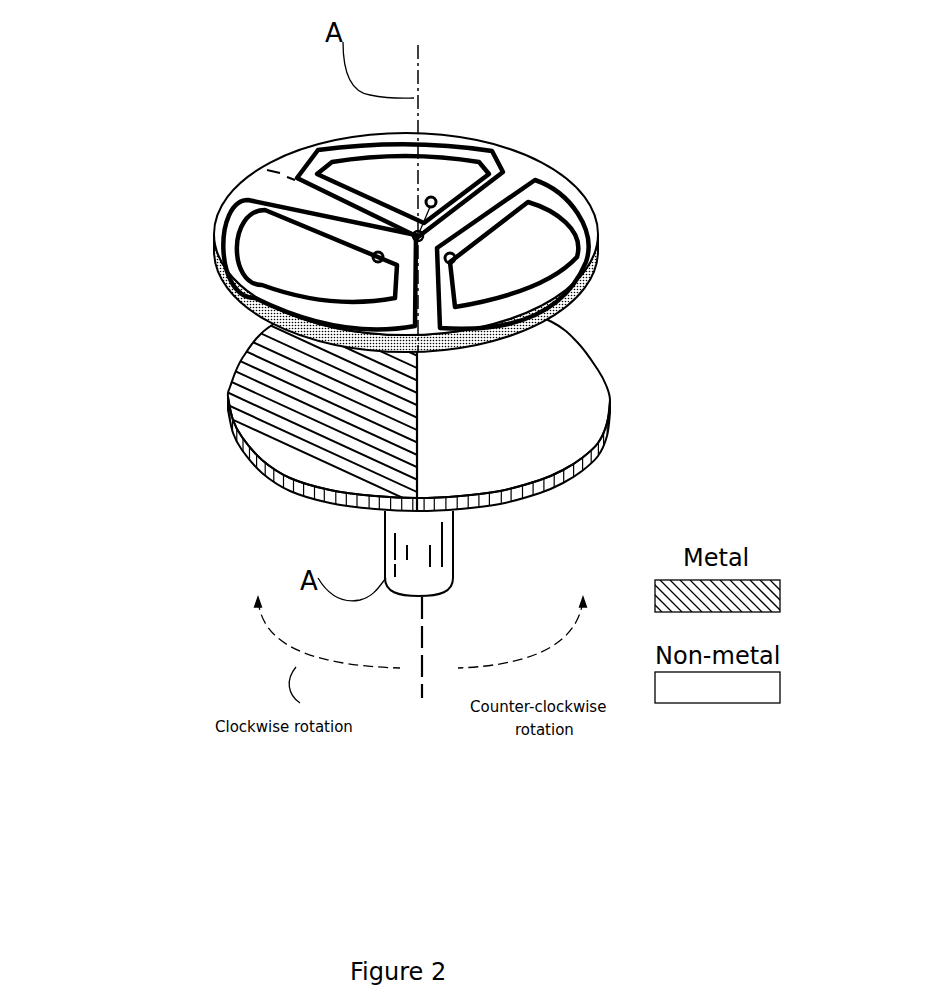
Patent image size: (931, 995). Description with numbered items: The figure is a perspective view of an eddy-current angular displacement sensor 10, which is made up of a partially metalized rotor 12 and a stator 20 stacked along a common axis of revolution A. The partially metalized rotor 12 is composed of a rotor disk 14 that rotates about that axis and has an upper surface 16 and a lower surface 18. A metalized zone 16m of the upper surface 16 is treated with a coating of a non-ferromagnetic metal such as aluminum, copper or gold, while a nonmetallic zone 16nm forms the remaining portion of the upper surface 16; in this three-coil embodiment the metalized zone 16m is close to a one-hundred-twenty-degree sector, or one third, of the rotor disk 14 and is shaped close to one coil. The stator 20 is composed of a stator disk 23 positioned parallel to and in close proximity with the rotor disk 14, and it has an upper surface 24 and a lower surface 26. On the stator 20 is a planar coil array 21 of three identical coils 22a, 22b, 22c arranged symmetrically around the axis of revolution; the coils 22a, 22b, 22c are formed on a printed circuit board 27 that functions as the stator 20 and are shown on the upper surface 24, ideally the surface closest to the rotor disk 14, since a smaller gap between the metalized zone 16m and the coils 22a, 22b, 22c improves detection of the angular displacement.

The eddy-current angular displacement sensor 10 is at (192, 475).
The partially metalized rotor 12 is at (590, 418).
The rotor disk 14 is at (540, 358).
The upper surface 16 is at (283, 403).
The metalized zone 16m is at (353, 460).
The nonmetallic zone 16nm is at (450, 425).
The lower surface 18 is at (263, 468).
The stator 20 is at (290, 148).
The planar coil array 21 is at (483, 178).
The coil 22a is at (265, 230).
The coil 22b is at (477, 247).
The coil 22c is at (440, 173).
The stator disk 23 is at (262, 182).
The upper surface 24 is at (262, 290).
The lower surface 26 is at (597, 273).
The printed circuit board 27 is at (517, 150).